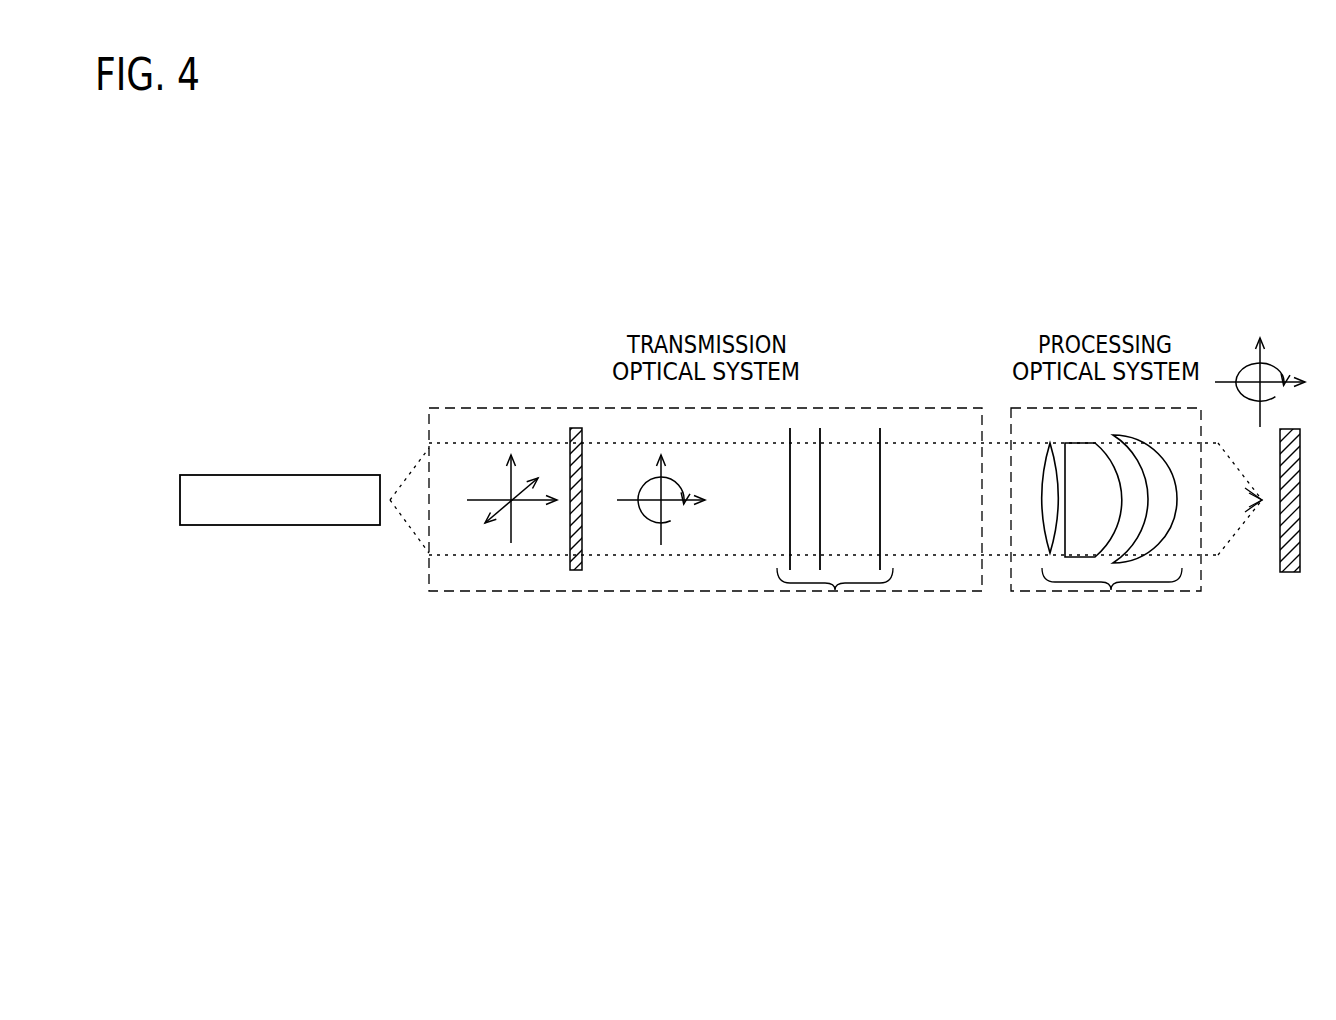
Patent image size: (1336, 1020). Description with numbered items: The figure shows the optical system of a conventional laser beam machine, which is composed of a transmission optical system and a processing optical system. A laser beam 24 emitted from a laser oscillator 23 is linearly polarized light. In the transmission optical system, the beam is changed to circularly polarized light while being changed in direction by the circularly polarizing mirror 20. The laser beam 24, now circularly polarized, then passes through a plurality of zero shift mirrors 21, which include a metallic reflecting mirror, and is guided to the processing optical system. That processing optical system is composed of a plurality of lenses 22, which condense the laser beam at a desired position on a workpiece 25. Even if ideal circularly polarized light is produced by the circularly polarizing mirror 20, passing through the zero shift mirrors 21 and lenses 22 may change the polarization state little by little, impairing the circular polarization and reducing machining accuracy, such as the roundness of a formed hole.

The circularly polarizing mirror 20 is at (578, 572).
The zero shift mirrors 21 is at (835, 590).
The lenses 22 is at (1111, 590).
The laser oscillator 23 is at (285, 485).
The laser beam 24 is at (415, 473).
The workpiece 25 is at (1292, 575).